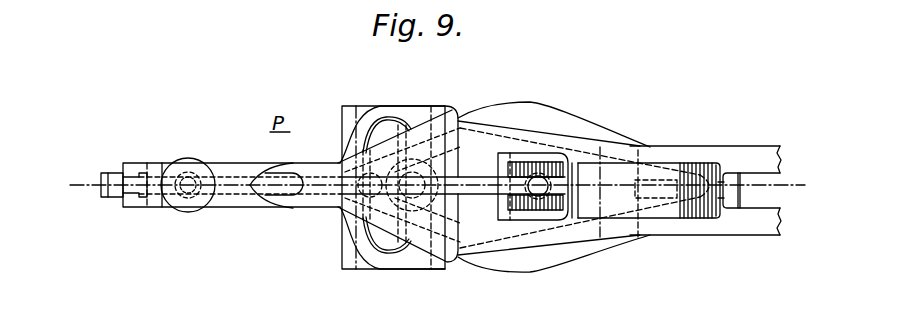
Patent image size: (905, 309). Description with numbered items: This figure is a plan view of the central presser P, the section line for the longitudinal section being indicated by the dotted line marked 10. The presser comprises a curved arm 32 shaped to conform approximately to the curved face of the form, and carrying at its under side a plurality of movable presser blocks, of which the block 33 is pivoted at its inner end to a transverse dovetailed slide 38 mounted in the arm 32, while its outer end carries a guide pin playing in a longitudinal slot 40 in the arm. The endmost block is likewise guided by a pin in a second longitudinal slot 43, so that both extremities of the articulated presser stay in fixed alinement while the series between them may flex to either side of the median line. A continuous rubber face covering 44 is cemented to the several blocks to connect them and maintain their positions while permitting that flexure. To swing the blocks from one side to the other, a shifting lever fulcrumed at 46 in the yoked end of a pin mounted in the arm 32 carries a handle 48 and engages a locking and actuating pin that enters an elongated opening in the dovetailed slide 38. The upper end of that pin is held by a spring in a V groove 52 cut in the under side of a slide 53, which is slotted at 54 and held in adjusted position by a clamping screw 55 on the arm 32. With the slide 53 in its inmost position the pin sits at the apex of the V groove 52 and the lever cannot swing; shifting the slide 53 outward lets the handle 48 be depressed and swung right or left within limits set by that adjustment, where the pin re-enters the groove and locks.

The axis / center line of assembly 10 is at (423, 185).
The arm 32 is at (717, 153).
The presser block 33 is at (119, 190).
The transverse dovetailed slide 38 is at (347, 252).
The longitudinal slot 40 is at (133, 180).
The longitudinal slot 43 is at (688, 212).
The face covering 44 is at (105, 190).
The fulcrum 46 is at (545, 222).
The handle 48 is at (313, 205).
The V groove 52 is at (458, 120).
The slide 53 is at (420, 240).
The slot 54 is at (253, 197).
The clamping screw 55 is at (193, 160).